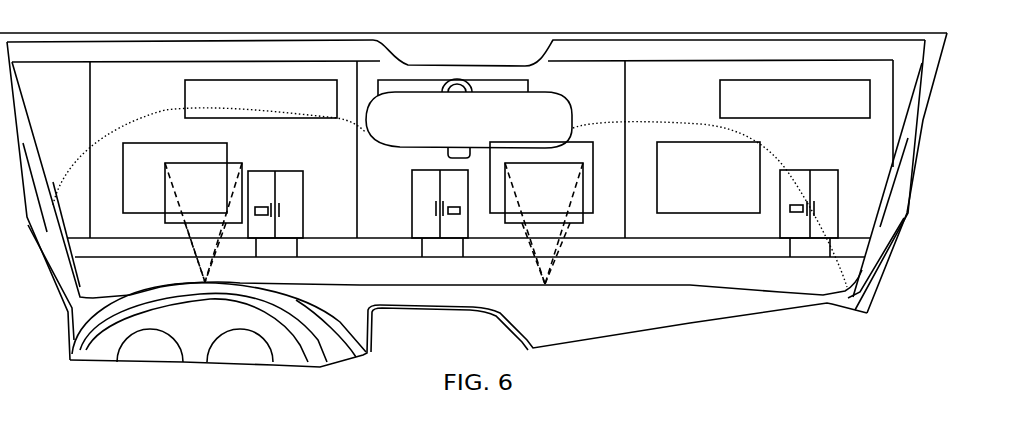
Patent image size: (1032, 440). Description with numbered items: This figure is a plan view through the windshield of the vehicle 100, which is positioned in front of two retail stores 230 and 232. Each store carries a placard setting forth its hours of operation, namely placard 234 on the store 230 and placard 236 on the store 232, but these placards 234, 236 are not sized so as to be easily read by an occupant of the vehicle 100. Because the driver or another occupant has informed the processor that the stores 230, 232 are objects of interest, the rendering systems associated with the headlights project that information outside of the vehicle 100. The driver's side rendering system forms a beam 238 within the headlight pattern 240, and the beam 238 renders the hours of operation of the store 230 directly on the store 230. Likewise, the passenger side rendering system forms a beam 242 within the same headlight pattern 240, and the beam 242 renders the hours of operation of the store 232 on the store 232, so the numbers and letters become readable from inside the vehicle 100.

The vehicle 100 is at (922, 62).
The retail store 230 is at (141, 94).
The retail store 232 is at (603, 90).
The placard 234 is at (263, 208).
The placard 236 is at (457, 217).
The beam 238 is at (173, 229).
The headlight pattern 240 is at (593, 123).
The beam 242 is at (582, 228).